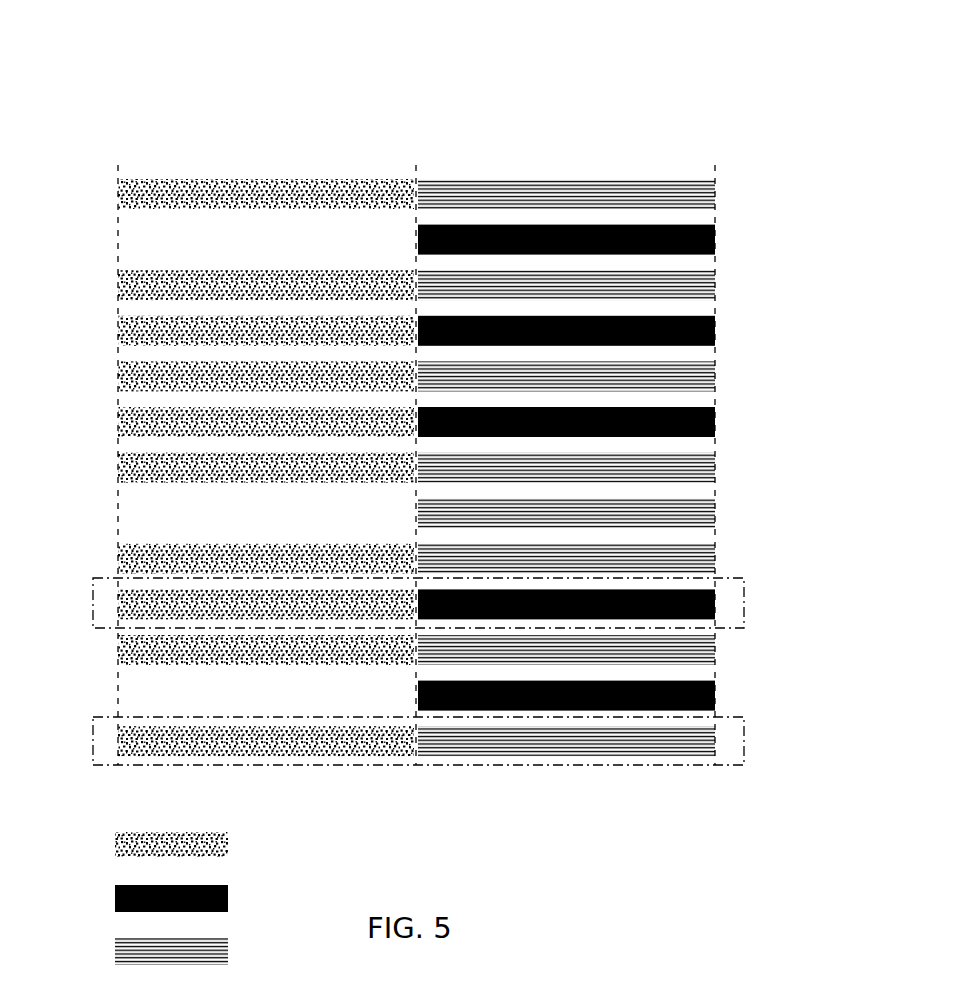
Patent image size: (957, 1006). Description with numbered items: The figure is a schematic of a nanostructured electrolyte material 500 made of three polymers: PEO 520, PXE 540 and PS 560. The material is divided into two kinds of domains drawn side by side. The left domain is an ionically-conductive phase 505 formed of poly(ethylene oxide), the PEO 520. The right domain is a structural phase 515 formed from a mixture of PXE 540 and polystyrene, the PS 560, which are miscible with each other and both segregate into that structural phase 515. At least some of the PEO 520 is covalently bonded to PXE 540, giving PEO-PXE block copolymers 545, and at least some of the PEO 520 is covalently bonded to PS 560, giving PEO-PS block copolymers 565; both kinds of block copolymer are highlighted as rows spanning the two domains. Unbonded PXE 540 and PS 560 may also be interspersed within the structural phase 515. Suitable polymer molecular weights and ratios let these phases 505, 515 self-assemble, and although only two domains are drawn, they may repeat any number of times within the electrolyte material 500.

The electrolyte material 500 is at (157, 115).
The ionically-conductive phase 505 is at (415, 155).
The structural phase 515 is at (715, 155).
The PEO 520 is at (140, 844).
The PXE 540 is at (140, 899).
The PEO-PXE block copolymer 545 is at (746, 574).
The PS 560 is at (140, 953).
The PEO-PS block copolymer 565 is at (616, 768).